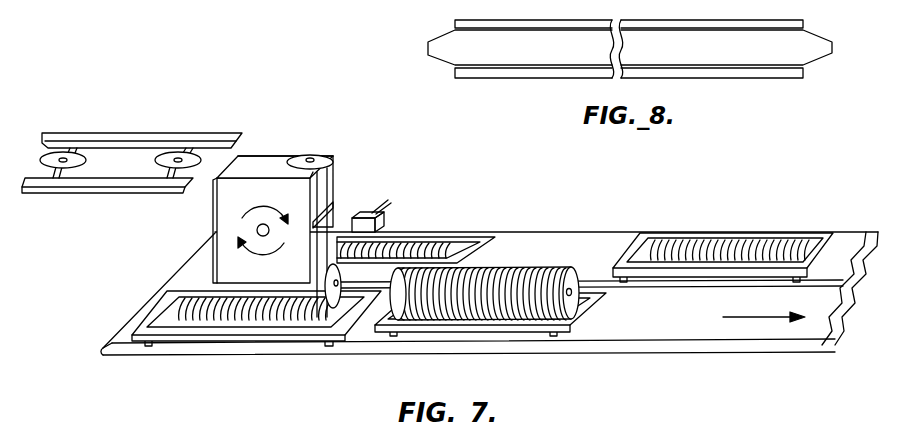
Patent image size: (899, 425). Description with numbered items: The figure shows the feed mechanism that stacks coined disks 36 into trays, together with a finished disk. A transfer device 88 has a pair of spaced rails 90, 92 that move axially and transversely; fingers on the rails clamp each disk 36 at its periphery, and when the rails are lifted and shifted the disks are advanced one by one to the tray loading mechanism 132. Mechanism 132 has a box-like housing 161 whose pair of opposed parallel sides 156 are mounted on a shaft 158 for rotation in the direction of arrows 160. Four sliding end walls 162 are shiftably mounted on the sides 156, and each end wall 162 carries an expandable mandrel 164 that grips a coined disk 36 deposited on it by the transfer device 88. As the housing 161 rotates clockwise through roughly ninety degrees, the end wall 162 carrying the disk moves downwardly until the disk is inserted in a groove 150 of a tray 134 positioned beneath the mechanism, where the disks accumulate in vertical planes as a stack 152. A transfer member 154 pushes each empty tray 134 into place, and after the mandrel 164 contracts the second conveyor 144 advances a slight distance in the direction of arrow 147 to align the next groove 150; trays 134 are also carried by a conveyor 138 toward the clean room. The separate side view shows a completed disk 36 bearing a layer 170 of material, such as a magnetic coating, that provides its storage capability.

In FIG. 7, the disk 36 is at (53, 155).
In FIG. 8, the disk 36 is at (647, 52).
In FIG. 7, the transfer device 88 is at (307, 178).
In FIG. 7, the rail 90 is at (112, 137).
In FIG. 7, the rail 92 is at (107, 182).
In FIG. 7, the tray loading mechanism 132 is at (338, 177).
In FIG. 7, the tray 134 is at (336, 349).
In FIG. 7, the conveyor 138 is at (848, 240).
In FIG. 7, the second conveyor 144 is at (693, 328).
In FIG. 7, the arrow 147 is at (762, 320).
In FIG. 7, the grooves 150 is at (432, 253).
In FIG. 7, the stack 152 is at (513, 262).
In FIG. 7, the transfer member 154 is at (370, 208).
In FIG. 7, the sides 156 is at (227, 265).
In FIG. 7, the shaft 158 is at (258, 232).
In FIG. 7, the arrows 160 is at (264, 208).
In FIG. 7, the box-like housing 161 is at (283, 150).
In FIG. 7, the sliding end wall 162 is at (255, 162).
In FIG. 7, the expandable mandrel 164 is at (313, 157).
In FIG. 8, the layer 170 is at (713, 23).